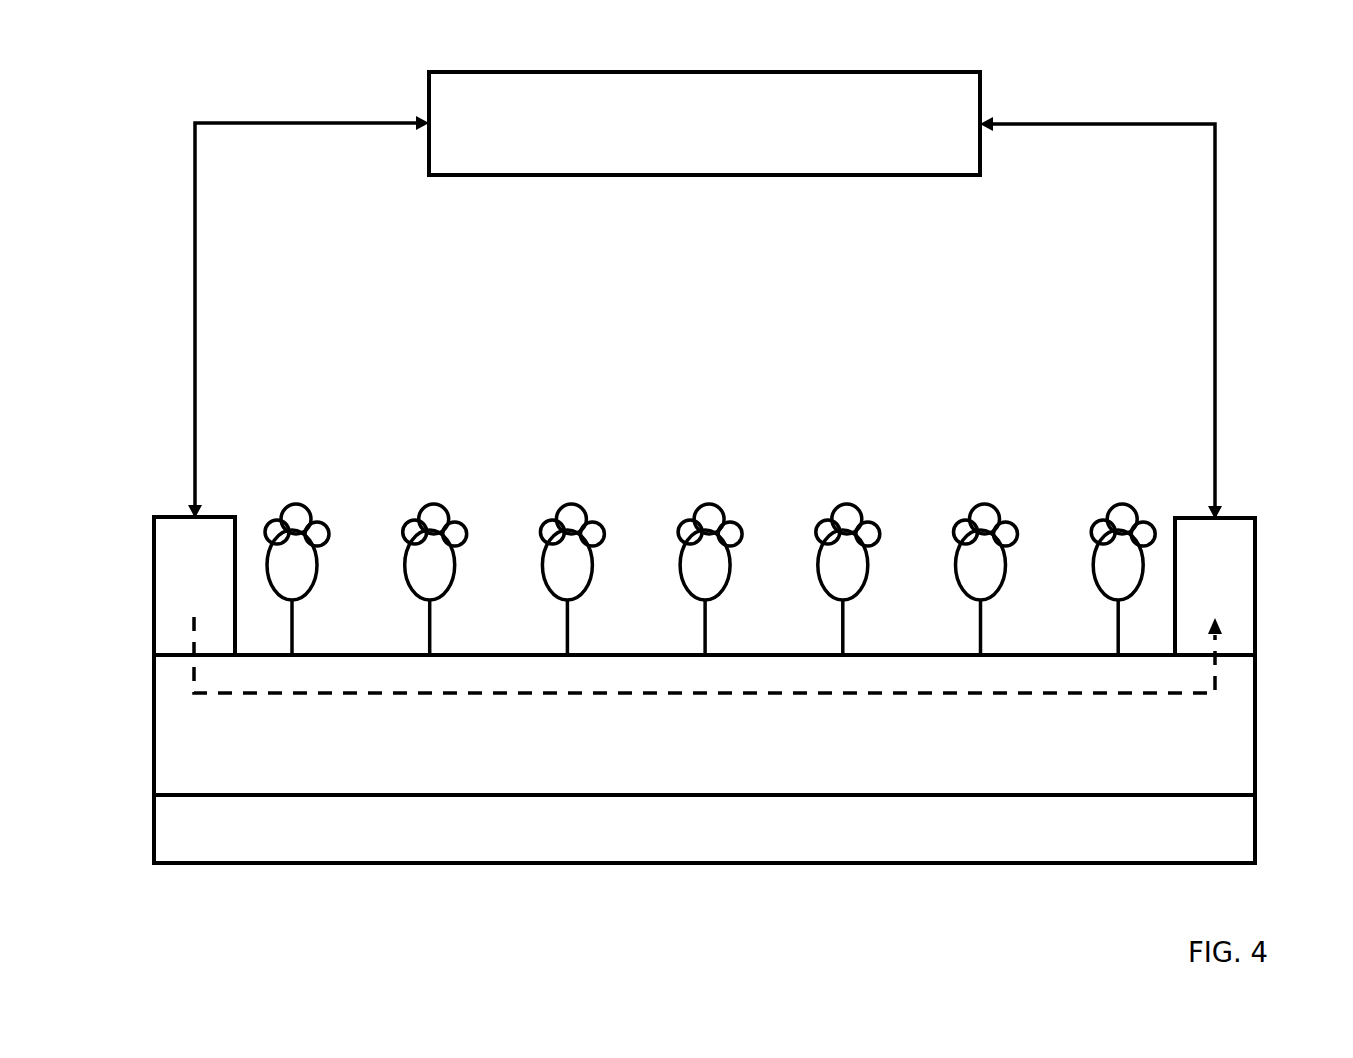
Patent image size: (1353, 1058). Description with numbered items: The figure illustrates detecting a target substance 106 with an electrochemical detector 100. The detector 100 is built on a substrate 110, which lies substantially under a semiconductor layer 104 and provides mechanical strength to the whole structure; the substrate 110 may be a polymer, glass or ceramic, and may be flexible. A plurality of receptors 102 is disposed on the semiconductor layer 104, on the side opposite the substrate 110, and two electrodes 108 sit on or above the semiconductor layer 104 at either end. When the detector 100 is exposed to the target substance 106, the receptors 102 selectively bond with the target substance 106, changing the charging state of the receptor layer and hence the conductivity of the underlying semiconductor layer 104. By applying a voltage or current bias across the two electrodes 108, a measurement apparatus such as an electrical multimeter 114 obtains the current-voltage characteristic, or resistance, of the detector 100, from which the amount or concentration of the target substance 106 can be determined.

The electrochemical detector 100 is at (699, 631).
The receptors 102 is at (303, 533).
The semiconductor layer 104 is at (1215, 749).
The target substance 106 is at (287, 512).
The electrodes 108 is at (185, 559).
The substrate 110 is at (1215, 840).
The electrical multimeter 114 is at (957, 82).